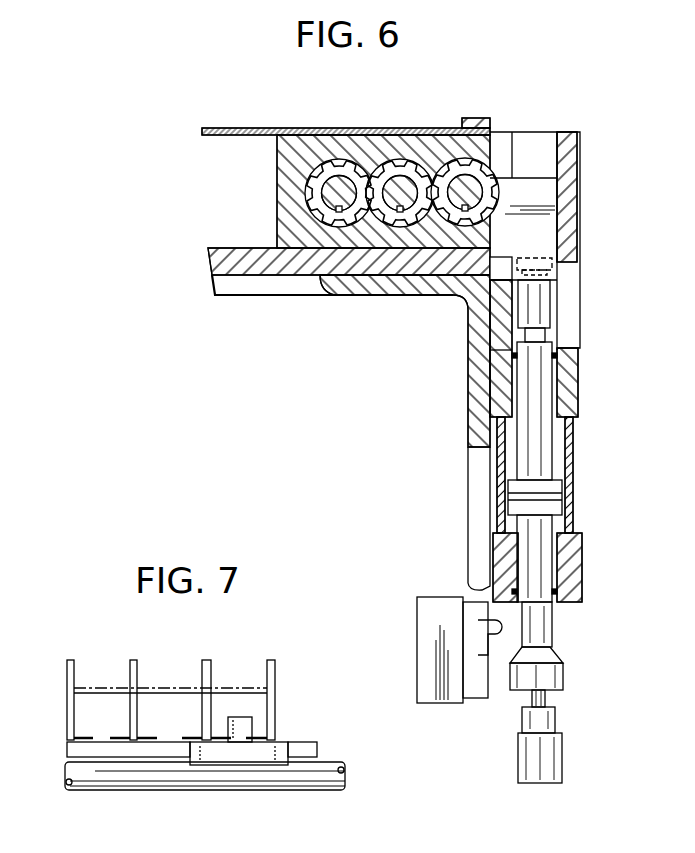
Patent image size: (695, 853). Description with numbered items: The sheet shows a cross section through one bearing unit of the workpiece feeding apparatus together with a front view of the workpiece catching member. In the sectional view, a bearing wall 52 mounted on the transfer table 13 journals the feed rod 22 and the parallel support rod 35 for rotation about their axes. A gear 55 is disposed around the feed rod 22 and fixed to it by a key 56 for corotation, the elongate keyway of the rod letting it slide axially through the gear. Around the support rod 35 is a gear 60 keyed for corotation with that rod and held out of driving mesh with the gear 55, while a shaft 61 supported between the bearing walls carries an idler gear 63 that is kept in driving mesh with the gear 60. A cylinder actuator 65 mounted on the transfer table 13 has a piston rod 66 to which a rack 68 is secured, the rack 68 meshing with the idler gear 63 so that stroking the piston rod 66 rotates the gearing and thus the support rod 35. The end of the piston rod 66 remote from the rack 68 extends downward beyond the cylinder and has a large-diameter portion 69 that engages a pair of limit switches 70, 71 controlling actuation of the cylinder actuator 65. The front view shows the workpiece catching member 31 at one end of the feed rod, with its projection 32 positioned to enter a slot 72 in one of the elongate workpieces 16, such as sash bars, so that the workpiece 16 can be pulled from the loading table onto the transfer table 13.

In FIG. 6, the transfer table 13 is at (256, 265).
In FIG. 7, the workpieces 16 is at (67, 675).
In FIG. 6, the feed rod 22 is at (300, 130).
In FIG. 7, the workpiece catching member 31 is at (268, 738).
In FIG. 7, the projection 32 is at (246, 717).
In FIG. 6, the support rod 35 is at (397, 243).
In FIG. 6, the bearing wall 52 is at (334, 243).
In FIG. 6, the gear 55 is at (341, 162).
In FIG. 6, the key 56 is at (305, 208).
In FIG. 6, the gear 60 is at (402, 162).
In FIG. 6, the shaft 61 is at (453, 297).
In FIG. 6, the idler gear 63 is at (457, 162).
In FIG. 6, the cylinder actuator 65 is at (582, 537).
In FIG. 6, the piston rod 66 is at (545, 457).
In FIG. 6, the rack 68 is at (547, 227).
In FIG. 6, the large-diameter portion 69 is at (563, 673).
In FIG. 6, the limit switch 70 is at (418, 628).
In FIG. 6, the limit switch 71 is at (546, 778).
In FIG. 7, the slot 72 is at (165, 742).